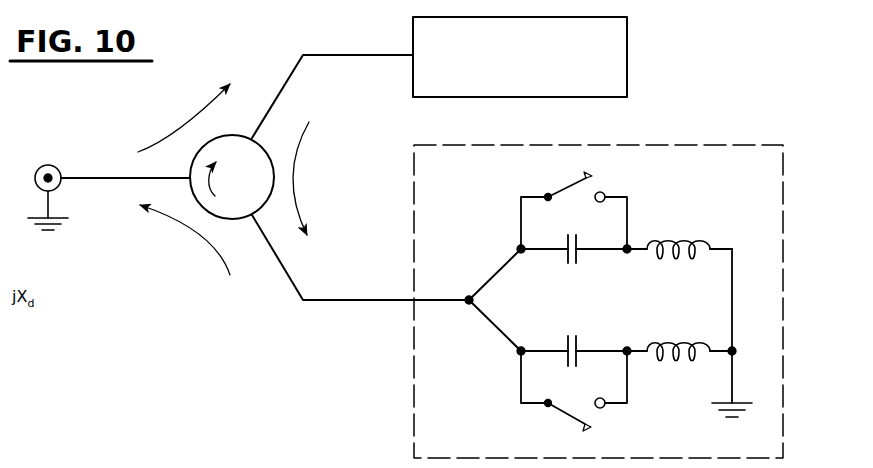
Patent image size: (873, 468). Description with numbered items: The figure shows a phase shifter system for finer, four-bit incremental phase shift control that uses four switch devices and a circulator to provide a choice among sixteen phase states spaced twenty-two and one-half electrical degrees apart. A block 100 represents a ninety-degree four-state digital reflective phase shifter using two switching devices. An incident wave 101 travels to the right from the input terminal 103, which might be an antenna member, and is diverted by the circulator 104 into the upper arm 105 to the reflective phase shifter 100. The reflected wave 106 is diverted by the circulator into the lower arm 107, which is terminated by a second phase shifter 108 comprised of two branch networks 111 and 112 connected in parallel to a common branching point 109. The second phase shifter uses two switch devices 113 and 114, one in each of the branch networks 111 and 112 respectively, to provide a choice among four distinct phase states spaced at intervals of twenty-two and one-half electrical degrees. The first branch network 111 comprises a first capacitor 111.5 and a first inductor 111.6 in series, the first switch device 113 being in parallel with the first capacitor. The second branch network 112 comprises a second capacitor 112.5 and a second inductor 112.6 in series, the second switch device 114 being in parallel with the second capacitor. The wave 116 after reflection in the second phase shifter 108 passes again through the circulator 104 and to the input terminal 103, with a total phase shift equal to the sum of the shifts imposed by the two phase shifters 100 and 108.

The 90-degree four-state digital reflective phase shifter 100 is at (632, 45).
The incident wave 101 is at (197, 123).
The input terminal 103 is at (48, 165).
The circulator 104 is at (242, 148).
The upper arm 105 is at (287, 80).
The reflected wave 106 is at (300, 160).
The lower arm 107 is at (357, 304).
The second phase shifter 108 is at (785, 285).
The common branching point 109 is at (469, 296).
The first branch network 111 is at (630, 252).
The first capacitor 111.5 is at (572, 264).
The first inductor 111.6 is at (667, 256).
The second branch network 112 is at (632, 343).
The second capacitor 112.5 is at (572, 336).
The second inductor 112.6 is at (665, 338).
The first switch device 113 is at (573, 203).
The second switch device 114 is at (580, 409).
The wave after reflection 116 is at (198, 233).